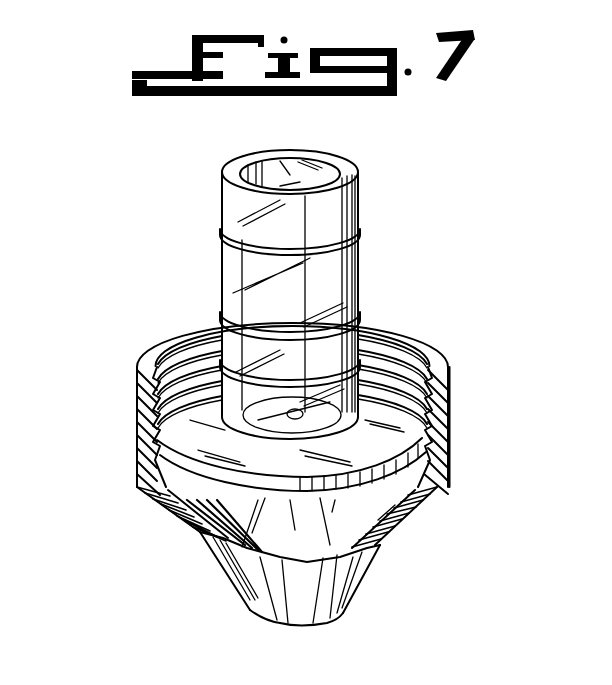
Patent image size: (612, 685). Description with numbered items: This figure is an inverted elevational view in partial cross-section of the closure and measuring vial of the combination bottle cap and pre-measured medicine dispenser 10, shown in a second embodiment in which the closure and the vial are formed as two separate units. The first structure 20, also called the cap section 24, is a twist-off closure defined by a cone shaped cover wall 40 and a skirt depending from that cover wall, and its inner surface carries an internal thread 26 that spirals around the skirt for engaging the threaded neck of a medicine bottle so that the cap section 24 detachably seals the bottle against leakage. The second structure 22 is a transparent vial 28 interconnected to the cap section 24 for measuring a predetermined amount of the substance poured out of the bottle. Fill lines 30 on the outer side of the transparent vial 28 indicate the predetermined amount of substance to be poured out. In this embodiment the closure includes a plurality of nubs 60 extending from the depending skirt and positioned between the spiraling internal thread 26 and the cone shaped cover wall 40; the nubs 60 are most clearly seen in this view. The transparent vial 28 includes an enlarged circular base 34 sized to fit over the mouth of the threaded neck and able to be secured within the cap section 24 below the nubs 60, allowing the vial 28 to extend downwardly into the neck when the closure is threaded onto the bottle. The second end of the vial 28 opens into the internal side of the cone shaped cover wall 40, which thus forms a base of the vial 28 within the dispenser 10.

The combination bottle cap and pre-measured medicine dispenser 10 is at (420, 263).
The first structure 20 is at (137, 400).
The second structure 22 is at (222, 293).
The first structure or cap section 24 is at (137, 440).
The internal thread 26 is at (394, 362).
The transparent vial 28 is at (243, 208).
The fill lines 30 is at (227, 240).
The enlarged circular base 34 is at (203, 475).
The cone shaped cover wall 40 is at (387, 540).
The nubs 60 is at (150, 492).